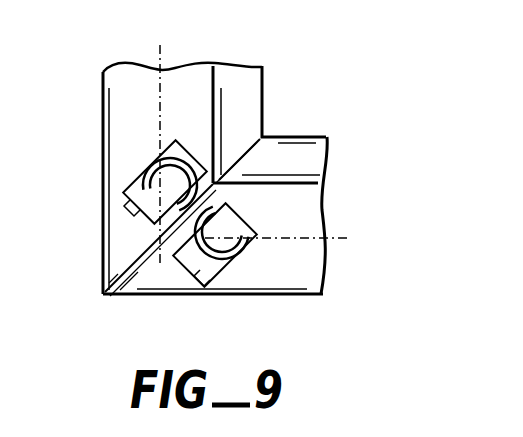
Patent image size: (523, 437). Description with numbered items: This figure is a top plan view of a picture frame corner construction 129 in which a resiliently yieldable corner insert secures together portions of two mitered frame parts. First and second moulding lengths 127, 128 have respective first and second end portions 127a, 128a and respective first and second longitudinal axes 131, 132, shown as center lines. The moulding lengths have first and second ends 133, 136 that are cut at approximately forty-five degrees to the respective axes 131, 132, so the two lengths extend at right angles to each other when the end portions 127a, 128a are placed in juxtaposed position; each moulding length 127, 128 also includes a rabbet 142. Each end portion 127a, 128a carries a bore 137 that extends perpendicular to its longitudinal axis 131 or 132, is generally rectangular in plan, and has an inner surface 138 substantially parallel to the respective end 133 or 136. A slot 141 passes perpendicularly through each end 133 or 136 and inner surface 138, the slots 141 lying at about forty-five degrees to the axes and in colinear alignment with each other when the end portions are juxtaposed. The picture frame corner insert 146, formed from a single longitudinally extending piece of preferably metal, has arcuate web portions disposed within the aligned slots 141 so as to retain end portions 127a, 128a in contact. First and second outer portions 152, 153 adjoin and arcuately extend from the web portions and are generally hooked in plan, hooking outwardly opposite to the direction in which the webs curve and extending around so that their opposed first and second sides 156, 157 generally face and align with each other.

The first moulding length 127 is at (326, 203).
The first end portion 127a is at (312, 298).
The second moulding length 128 is at (193, 63).
The second end portion 128a is at (101, 72).
The picture frame corner construction 129 is at (352, 63).
The first longitudinal axis 131 is at (340, 243).
The second longitudinal axis 132 is at (158, 59).
The first end 133 is at (101, 288).
The second end 136 is at (273, 138).
The bore 137 is at (123, 173).
The inner surface 138 is at (126, 206).
The slot 141 is at (176, 224).
The rabbet 142 is at (250, 97).
The picture frame corner insert 146 is at (160, 262).
The first outer portion 152 is at (236, 250).
The second outer portion 153 is at (150, 172).
The first side 156 is at (238, 207).
The second side 157 is at (191, 168).